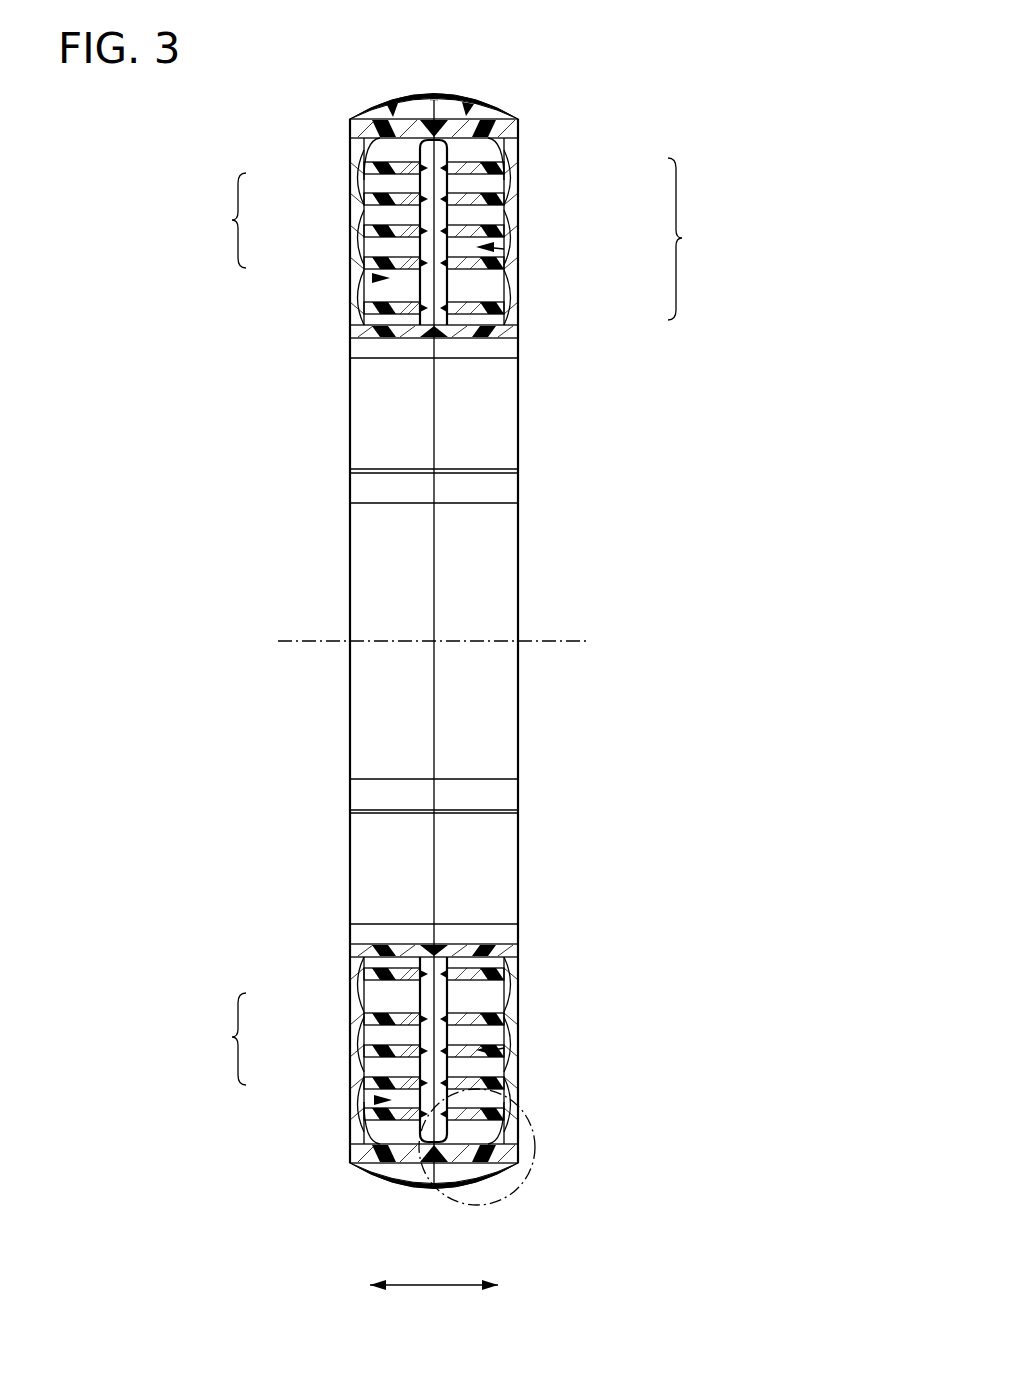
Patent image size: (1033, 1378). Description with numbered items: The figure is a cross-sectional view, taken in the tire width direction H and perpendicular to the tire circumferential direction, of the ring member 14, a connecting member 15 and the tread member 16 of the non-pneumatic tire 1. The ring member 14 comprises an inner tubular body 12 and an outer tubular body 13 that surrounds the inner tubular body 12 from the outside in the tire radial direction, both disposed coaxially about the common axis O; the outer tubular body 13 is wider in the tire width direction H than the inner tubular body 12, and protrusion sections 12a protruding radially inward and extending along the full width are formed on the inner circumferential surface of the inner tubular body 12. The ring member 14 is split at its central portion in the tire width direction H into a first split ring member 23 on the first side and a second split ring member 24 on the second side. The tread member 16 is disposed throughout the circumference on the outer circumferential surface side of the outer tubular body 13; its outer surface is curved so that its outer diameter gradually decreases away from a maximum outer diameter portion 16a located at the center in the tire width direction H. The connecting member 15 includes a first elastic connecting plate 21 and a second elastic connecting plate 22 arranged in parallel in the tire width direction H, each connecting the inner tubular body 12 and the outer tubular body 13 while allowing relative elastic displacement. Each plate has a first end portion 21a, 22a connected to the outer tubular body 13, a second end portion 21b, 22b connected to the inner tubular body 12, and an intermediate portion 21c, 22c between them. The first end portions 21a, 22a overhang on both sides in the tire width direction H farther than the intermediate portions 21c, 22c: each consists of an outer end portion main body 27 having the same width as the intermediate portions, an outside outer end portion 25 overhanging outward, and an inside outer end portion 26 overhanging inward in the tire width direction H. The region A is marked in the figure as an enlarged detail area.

The non-pneumatic tire 1 is at (722, 88).
The inner tubular body 12 is at (540, 326).
The protrusion section 12a is at (505, 483).
The outer tubular body 13 is at (540, 134).
The ring member 14 is at (690, 239).
The connecting member 15 is at (223, 629).
The tread member 16 is at (518, 90).
The maximum outer diameter portion 16a is at (433, 125).
The first elastic connecting plate 21 is at (456, 186).
The first end portion 21a is at (490, 125).
The second end portion 21b is at (487, 322).
The intermediate portion 21c is at (504, 249).
The second elastic connecting plate 22 is at (378, 244).
The first end portion 22a is at (383, 125).
The second end portion 22b is at (383, 322).
The intermediate portion 22c is at (374, 279).
The first split ring member 23 is at (469, 108).
The second split ring member 24 is at (391, 108).
The outside outer end portion 25 is at (365, 170).
The inside outer end portion 26 is at (428, 140).
The outer end portion main body 27 is at (388, 130).
The region A is at (542, 1172).
The axis O is at (575, 635).
The tire width direction H is at (434, 1300).